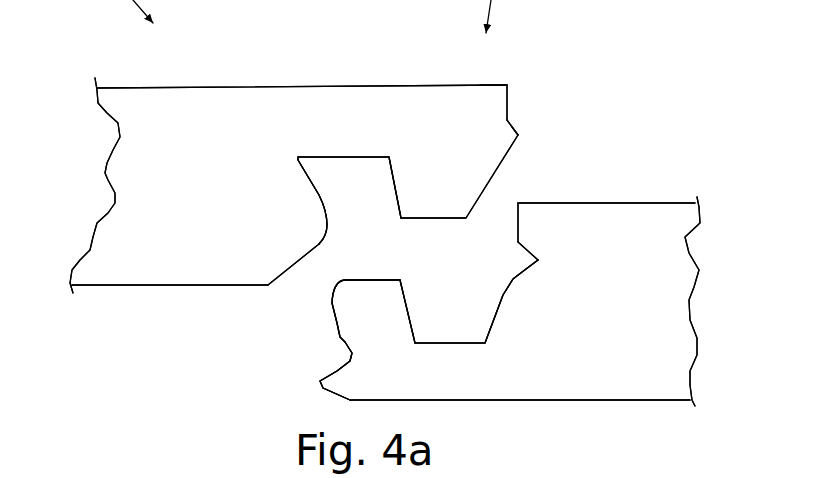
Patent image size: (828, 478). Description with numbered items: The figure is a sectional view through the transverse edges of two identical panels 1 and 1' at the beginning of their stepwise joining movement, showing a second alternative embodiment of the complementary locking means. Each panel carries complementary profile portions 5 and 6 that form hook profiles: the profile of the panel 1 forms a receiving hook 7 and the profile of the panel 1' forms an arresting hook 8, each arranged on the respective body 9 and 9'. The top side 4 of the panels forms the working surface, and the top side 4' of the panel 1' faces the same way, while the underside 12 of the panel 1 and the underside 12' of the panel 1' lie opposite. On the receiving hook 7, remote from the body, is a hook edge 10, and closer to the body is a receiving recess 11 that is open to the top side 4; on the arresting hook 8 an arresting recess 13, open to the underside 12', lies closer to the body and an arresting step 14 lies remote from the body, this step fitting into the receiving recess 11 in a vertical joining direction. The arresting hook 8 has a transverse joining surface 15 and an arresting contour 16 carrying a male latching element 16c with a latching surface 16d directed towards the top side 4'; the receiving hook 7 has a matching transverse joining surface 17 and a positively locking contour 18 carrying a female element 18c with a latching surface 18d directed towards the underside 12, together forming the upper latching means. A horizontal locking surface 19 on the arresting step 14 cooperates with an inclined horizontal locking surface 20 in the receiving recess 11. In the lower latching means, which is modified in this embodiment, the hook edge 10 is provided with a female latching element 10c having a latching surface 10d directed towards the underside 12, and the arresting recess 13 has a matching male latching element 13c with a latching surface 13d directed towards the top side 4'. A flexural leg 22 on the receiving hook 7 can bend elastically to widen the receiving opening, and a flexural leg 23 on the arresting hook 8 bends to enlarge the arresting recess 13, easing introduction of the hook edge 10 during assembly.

The panel 1 is at (688, 127).
The panel 1' is at (114, 468).
The top side 4 is at (609, 165).
The top side 4' is at (90, 49).
The profile portion 5 is at (668, 412).
The profile portion 6 is at (239, 71).
The receiving hook 7 is at (650, 388).
The arresting hook 8 is at (175, 138).
The body 9 is at (713, 301).
The body 9' is at (76, 185).
The hook edge 10 is at (388, 322).
The female latching element 10c is at (345, 353).
The latching surface 10d is at (335, 332).
The receiving recess 11 is at (466, 335).
The underside 12 is at (449, 439).
The underside 12' is at (166, 325).
The arresting recess 13 is at (366, 180).
The male latching element 13c is at (320, 240).
The latching surface 13d is at (396, 212).
The arresting step 14 is at (452, 209).
The transverse joining surface 15 is at (510, 88).
The arresting contour 16 is at (516, 114).
The male latching element 16c is at (515, 137).
The latching surface 16d is at (520, 135).
The transverse joining surface 17 is at (517, 203).
The positively locking contour 18 is at (447, 243).
The female element 18c is at (524, 265).
The latching surface 18d is at (518, 242).
The horizontal locking surface 19 is at (399, 221).
The horizontal locking surface 20 is at (408, 313).
The flexural leg 22 is at (470, 390).
The flexural leg 23 is at (353, 121).